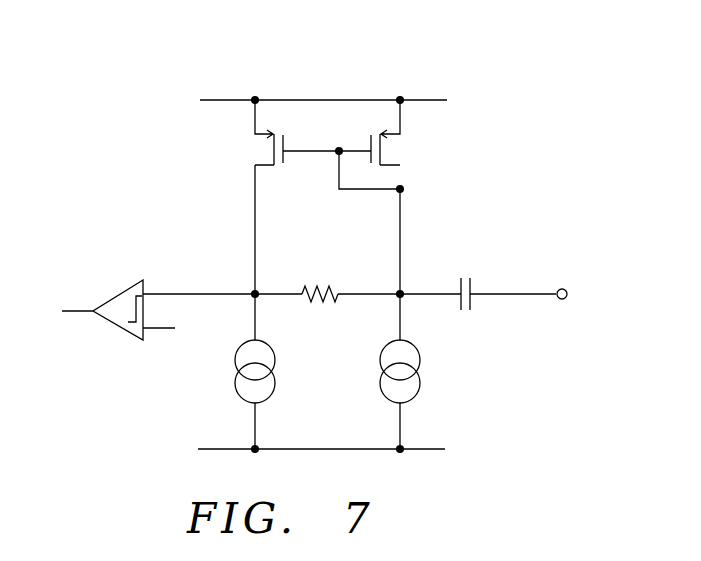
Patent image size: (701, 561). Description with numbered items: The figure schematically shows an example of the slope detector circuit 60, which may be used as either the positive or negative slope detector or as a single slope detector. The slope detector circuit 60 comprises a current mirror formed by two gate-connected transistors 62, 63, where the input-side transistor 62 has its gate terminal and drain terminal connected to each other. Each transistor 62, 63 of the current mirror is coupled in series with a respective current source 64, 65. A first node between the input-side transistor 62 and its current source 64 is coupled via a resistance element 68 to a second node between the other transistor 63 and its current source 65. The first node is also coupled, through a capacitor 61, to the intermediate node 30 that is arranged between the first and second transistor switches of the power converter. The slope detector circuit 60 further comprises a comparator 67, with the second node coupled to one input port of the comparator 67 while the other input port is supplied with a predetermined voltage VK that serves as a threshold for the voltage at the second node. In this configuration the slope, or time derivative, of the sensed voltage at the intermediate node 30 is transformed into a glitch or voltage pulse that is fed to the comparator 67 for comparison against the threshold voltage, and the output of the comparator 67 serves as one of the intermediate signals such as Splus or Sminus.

The slope detector circuit 60 is at (201, 61).
The capacitor 61 is at (477, 283).
The input-side transistor 62 is at (410, 149).
The transistor 63 is at (246, 149).
The current source 64 is at (424, 370).
The current source 65 is at (231, 370).
The comparator 67 is at (117, 325).
The resistance element 68 is at (305, 282).
The intermediate node 30 is at (607, 292).